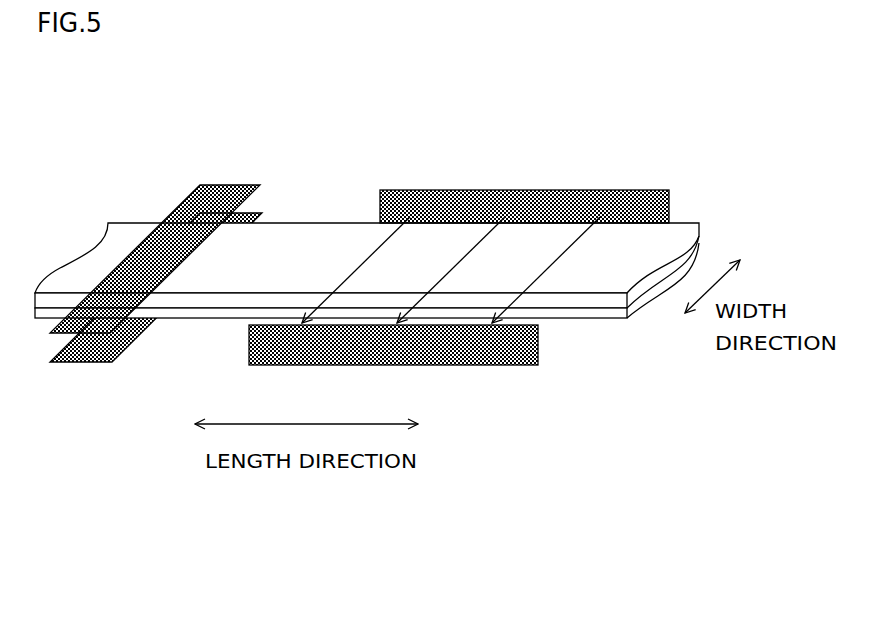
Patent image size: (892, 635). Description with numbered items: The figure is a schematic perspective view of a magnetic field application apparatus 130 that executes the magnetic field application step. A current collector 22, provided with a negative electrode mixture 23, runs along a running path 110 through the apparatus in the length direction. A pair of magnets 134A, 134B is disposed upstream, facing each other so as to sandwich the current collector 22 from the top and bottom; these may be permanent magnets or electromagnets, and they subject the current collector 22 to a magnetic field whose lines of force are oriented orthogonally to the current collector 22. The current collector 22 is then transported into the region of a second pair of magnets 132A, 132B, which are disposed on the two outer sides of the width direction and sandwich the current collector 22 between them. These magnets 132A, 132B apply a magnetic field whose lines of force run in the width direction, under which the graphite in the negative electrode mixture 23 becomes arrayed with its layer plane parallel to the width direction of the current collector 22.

The running path 110 is at (367, 263).
The current collector 22 is at (595, 313).
The negative electrode mixture 23 is at (300, 222).
The magnetic field application apparatus 130 is at (479, 268).
The magnet 132A is at (514, 366).
The magnet 132B is at (648, 198).
The magnet 134A is at (97, 362).
The magnet 134B is at (195, 208).